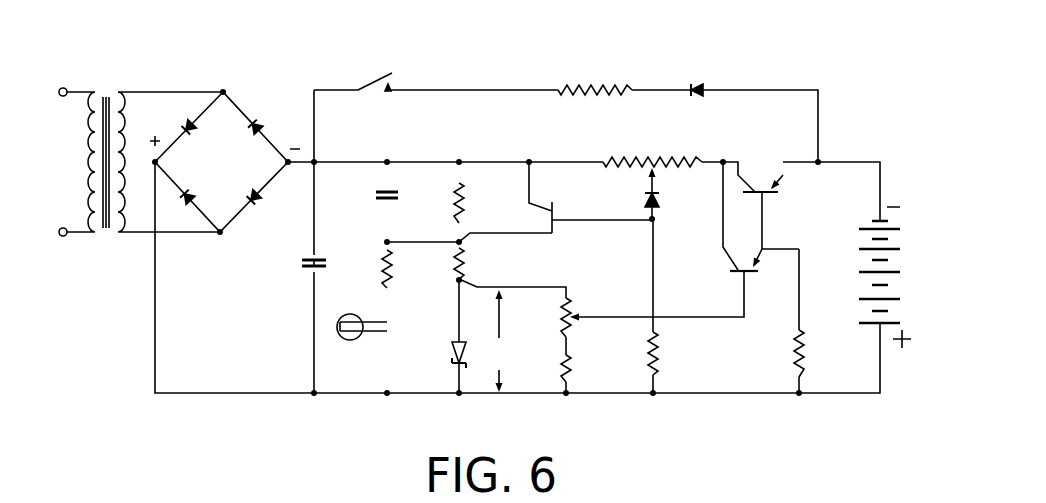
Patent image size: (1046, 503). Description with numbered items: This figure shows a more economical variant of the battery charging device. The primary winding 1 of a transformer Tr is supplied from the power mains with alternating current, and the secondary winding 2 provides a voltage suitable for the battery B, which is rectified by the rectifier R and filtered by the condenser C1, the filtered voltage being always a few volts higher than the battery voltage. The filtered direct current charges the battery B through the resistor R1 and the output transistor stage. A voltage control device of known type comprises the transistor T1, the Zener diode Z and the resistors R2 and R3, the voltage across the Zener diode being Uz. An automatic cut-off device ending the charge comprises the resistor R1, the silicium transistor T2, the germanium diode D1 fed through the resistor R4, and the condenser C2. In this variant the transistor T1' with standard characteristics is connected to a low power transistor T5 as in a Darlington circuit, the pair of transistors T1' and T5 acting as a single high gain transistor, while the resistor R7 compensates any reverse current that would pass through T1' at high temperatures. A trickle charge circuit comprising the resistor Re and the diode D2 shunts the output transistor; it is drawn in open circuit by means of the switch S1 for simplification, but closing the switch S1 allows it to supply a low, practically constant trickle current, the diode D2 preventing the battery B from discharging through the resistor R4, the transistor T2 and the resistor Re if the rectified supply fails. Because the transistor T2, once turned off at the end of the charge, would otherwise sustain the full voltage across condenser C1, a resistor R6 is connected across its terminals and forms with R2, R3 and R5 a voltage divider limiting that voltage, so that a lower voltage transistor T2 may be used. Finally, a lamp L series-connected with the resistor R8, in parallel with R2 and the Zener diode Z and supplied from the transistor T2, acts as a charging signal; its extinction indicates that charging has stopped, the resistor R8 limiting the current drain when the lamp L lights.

The primary winding 1 is at (90, 136).
The secondary winding 2 is at (118, 135).
The transformer Tr is at (109, 240).
The rectifier R is at (232, 176).
The condenser C1 is at (306, 266).
The condenser C2 is at (382, 193).
The resistor R8 is at (387, 260).
The resistor R6 is at (457, 192).
The resistor R2 is at (457, 258).
The silicium transistor T2 is at (550, 199).
The resistor R1 is at (674, 157).
The germanium diode D1 is at (658, 200).
The resistor Re is at (611, 79).
The switch S1 is at (372, 80).
The diode D2 is at (700, 78).
The transistor T1' is at (771, 185).
The transistor T1 is at (798, 203).
The low power transistor T5 is at (718, 261).
The resistor R3 is at (563, 307).
The resistor R5 is at (570, 368).
The resistor R4 is at (657, 343).
The resistor R7 is at (801, 340).
The battery B is at (888, 292).
The Zener diode Z is at (455, 345).
The lamp L is at (343, 338).
The voltage at the terminals of the Zener diode Uz is at (501, 341).